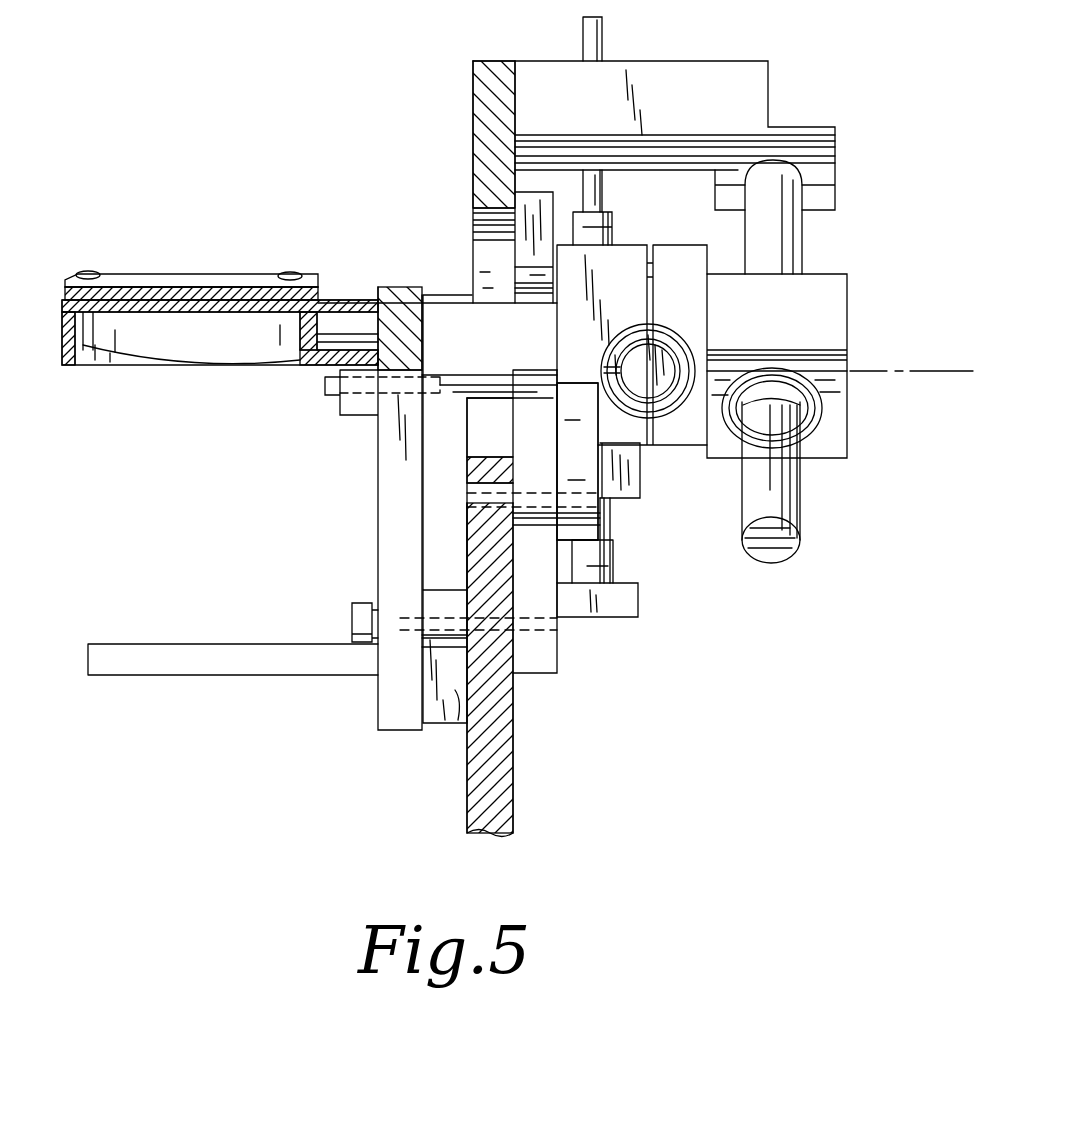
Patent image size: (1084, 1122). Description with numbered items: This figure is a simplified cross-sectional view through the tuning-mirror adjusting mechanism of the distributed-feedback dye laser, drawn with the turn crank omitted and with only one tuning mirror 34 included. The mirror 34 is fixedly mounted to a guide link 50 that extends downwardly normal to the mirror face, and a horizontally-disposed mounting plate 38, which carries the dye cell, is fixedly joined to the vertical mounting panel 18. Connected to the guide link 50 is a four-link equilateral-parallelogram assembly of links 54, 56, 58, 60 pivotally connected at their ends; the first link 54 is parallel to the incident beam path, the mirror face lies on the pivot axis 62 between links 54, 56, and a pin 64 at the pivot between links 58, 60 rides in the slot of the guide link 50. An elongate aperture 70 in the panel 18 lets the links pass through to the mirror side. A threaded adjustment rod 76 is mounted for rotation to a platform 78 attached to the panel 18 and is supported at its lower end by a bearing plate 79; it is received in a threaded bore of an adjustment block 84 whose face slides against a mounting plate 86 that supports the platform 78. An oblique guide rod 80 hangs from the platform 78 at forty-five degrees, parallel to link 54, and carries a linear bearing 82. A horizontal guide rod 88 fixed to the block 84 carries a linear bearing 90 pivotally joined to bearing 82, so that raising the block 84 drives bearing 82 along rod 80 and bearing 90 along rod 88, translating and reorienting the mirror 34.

The vertical mounting panel 18 is at (497, 760).
The first tuning mirror 34 is at (220, 337).
The mounting plate 38 is at (224, 662).
The guide link 50 is at (400, 537).
The first link 54 is at (590, 470).
The second link 56 is at (458, 508).
The third link 58 is at (430, 655).
The fourth link 60 is at (545, 655).
The pivot axis 62 is at (918, 368).
The pin 64 is at (365, 604).
The elongate aperture 70 is at (485, 265).
The threaded adjustment rod 76 is at (598, 40).
The platform 78 is at (762, 86).
The bearing plate 79 is at (630, 600).
The guide rod 80 is at (785, 504).
The linear bearing 82 is at (788, 312).
The adjustment block 84 is at (637, 468).
The mounting plate 86 is at (535, 200).
The horizontal guide rod 88 is at (645, 368).
The linear bearing 90 is at (625, 255).